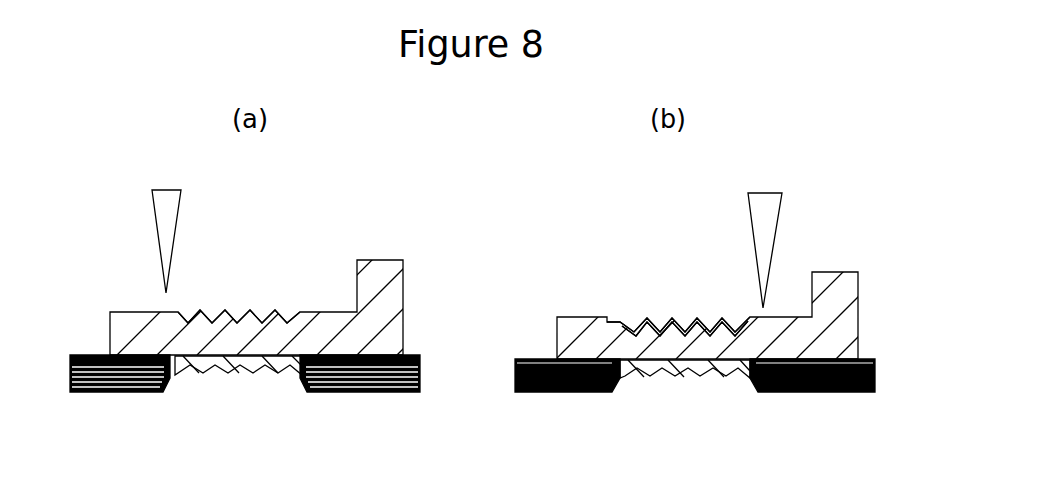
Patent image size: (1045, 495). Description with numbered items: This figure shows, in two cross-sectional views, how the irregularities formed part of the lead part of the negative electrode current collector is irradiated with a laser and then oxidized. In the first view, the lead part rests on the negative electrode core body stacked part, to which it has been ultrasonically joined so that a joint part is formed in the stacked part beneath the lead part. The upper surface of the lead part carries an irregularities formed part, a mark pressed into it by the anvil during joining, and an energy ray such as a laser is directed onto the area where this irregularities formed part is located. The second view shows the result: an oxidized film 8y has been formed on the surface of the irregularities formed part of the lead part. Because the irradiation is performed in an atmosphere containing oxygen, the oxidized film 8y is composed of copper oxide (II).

The oxidized film 8y is at (630, 318).